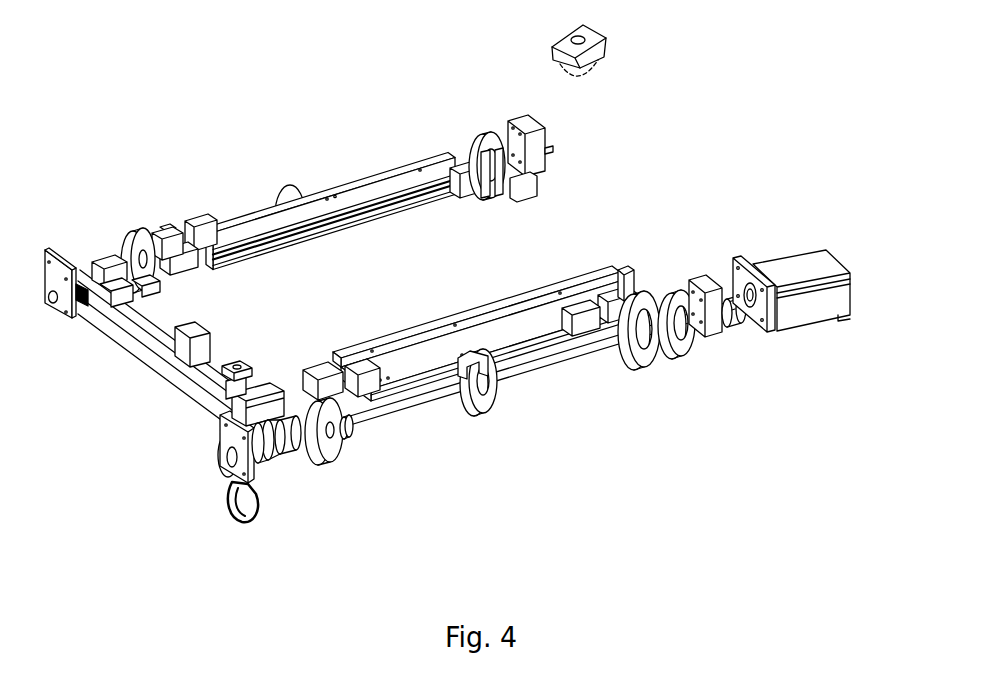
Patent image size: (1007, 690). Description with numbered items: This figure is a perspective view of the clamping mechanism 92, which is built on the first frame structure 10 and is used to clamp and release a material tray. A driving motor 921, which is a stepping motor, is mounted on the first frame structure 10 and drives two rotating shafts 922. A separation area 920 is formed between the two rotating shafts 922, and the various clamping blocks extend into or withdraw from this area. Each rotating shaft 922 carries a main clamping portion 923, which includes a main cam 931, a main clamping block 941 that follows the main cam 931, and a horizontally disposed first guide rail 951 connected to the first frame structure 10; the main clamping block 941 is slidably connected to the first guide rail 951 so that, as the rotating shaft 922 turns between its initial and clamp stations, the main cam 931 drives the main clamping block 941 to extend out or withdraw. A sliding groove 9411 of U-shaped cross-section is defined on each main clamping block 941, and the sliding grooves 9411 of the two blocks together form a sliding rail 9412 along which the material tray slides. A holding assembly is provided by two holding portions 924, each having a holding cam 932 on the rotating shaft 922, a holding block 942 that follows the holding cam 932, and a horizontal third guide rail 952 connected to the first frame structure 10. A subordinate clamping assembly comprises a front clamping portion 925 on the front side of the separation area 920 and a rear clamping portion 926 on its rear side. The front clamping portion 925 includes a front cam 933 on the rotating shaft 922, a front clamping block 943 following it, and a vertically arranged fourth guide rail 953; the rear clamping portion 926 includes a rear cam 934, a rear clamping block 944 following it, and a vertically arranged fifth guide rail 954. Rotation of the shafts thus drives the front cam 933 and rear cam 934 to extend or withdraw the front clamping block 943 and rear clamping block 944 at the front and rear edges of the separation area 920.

The clamping mechanism 92 is at (83, 21).
The first frame structure 10 is at (66, 290).
The separation area 920 is at (436, 191).
The driving motor 921 is at (803, 268).
The rotating shaft 922 is at (403, 407).
The main clamping portion 923 is at (286, 200).
The holding portion 924 is at (158, 230).
The front clamping portion 925 is at (487, 134).
The rear clamping portion 926 is at (127, 260).
The main cam 931 is at (497, 390).
The holding cam 932 is at (345, 442).
The front cam 933 is at (655, 343).
The rear cam 934 is at (247, 467).
The main clamping block 941 is at (507, 345).
The holding block 942 is at (523, 110).
The front clamping block 943 is at (705, 318).
The rear clamping block 944 is at (230, 390).
The first guide rail 951 is at (550, 323).
The third guide rail 952 is at (338, 440).
The fourth guide rail 953 is at (692, 335).
The fifth guide rail 954 is at (253, 447).
The sliding groove 9411 is at (443, 323).
The sliding rail 9412 is at (413, 191).